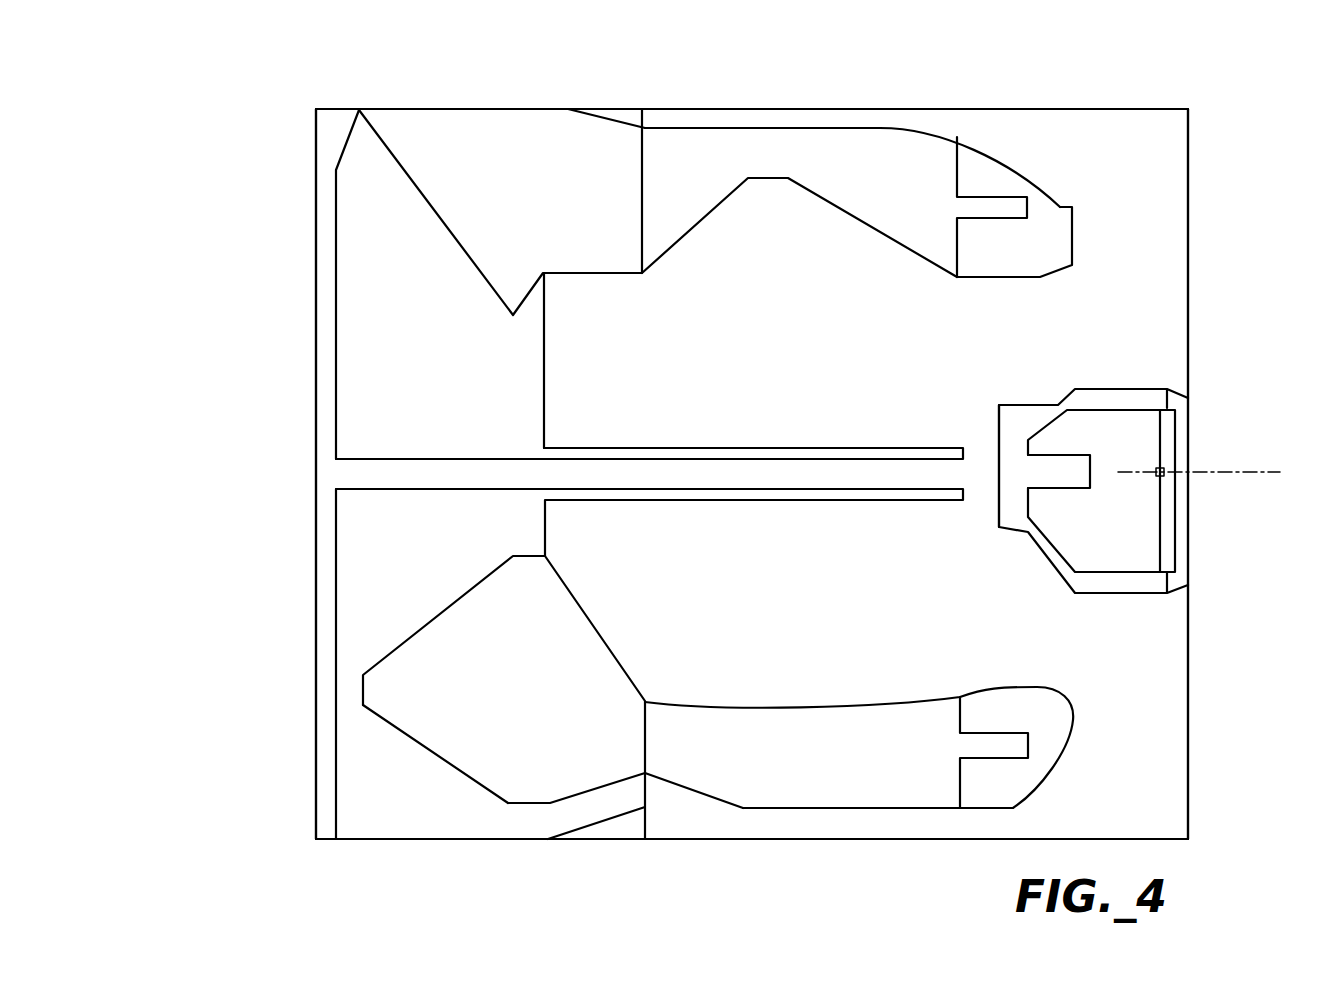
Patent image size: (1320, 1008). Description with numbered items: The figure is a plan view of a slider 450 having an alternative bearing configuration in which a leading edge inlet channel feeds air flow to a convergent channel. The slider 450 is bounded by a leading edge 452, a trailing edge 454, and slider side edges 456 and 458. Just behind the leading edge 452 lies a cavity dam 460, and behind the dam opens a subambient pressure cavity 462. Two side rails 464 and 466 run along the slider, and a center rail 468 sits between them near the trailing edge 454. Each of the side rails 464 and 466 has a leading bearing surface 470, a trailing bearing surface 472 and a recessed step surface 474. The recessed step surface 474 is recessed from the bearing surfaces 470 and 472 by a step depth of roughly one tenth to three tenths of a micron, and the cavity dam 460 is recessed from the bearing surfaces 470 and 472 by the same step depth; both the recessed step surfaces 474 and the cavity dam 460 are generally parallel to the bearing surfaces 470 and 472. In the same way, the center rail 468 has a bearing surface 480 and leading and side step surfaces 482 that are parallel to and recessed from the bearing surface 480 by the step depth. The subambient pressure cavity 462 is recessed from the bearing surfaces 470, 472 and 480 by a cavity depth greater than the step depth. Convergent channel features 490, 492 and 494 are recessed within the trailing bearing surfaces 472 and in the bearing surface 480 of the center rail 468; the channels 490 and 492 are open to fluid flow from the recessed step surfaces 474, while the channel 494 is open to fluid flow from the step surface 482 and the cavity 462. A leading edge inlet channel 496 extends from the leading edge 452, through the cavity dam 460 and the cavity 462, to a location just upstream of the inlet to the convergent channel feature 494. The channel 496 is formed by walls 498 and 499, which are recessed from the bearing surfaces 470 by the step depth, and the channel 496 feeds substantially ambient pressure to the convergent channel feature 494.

The slider 450 is at (274, 95).
The leading edge 452 is at (317, 415).
The trailing edge 454 is at (1190, 195).
The slider side edge 456 is at (607, 108).
The slider side edge 458 is at (611, 840).
The cavity dam 460 is at (353, 572).
The subambient pressure cavity 462 is at (788, 372).
The side rail 464 is at (446, 132).
The side rail 466 is at (444, 769).
The center rail 468 is at (992, 397).
The leading bearing surface 470 is at (483, 124).
The trailing bearing surface 472 is at (985, 168).
The recessed step surface 474 is at (838, 130).
The bearing surface 480 is at (1137, 457).
The leading and side step surfaces 482 is at (1005, 495).
The convergent channel feature 490 is at (1018, 194).
The convergent channel feature 492 is at (1038, 772).
The convergent channel feature 494 is at (1053, 491).
The leading edge inlet channel 496 is at (650, 476).
The wall 498 is at (680, 452).
The wall 499 is at (680, 495).